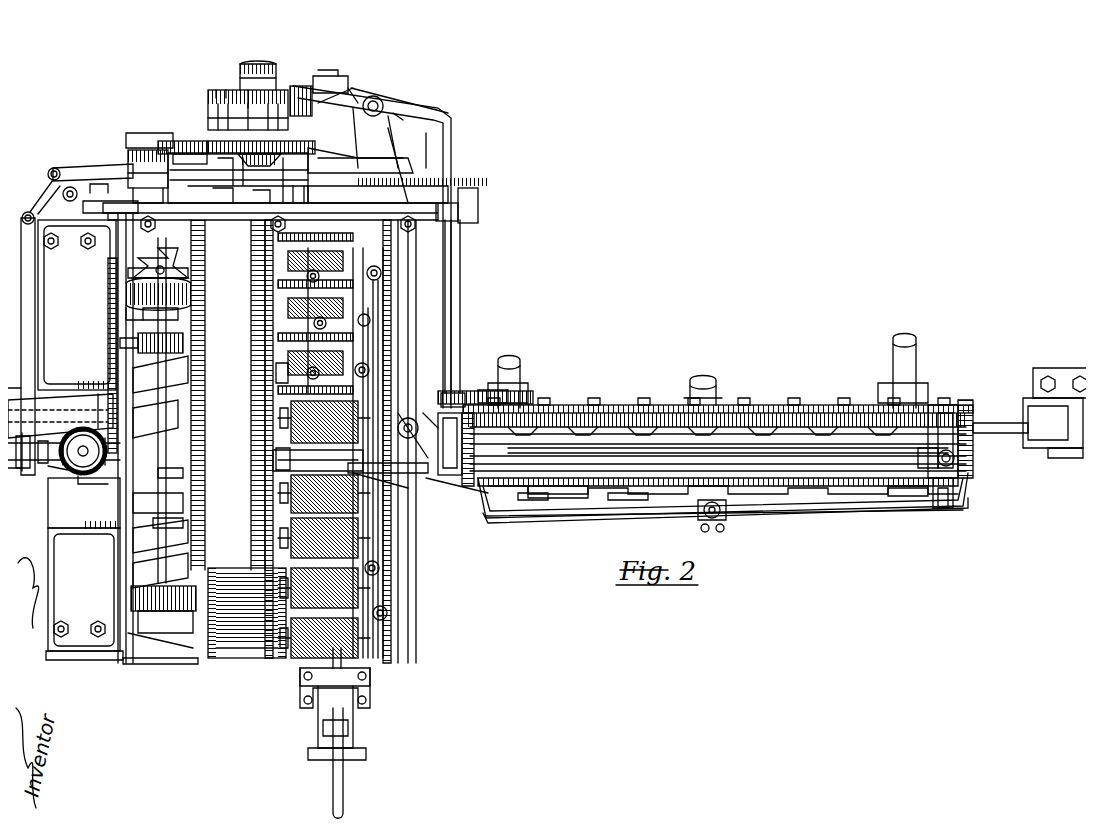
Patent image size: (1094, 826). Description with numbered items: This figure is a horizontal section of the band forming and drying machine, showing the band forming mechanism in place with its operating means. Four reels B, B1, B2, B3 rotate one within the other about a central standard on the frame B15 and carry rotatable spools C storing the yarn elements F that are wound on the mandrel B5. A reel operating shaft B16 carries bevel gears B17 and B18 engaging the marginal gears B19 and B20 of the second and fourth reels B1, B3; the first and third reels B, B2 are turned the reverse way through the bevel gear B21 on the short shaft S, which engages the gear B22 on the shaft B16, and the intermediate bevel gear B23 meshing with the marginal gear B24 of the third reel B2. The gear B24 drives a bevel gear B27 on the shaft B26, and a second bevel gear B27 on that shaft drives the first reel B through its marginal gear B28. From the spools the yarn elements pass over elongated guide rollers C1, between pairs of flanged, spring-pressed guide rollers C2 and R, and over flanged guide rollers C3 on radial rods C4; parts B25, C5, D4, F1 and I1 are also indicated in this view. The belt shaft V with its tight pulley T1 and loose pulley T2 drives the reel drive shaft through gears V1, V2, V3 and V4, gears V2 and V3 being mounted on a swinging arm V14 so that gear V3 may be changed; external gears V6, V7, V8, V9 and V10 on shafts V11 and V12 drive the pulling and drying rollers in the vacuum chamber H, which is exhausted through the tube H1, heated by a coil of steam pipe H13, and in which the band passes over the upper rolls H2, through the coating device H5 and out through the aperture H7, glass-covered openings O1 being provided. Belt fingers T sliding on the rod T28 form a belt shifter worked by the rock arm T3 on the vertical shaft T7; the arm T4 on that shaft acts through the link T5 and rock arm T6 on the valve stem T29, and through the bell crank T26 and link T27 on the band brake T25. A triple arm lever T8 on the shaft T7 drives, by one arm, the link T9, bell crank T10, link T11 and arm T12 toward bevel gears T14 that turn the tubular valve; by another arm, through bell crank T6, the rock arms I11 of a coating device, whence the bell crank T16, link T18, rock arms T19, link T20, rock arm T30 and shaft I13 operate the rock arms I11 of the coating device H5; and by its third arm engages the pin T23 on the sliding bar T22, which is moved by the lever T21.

The first reel B is at (165, 392).
The second reel B1 is at (175, 420).
The third reel B2 is at (180, 330).
The fourth reel B3 is at (188, 505).
The mandrel B5 is at (355, 478).
The frame B15 is at (78, 644).
The reel operating shaft B16 is at (130, 125).
The bevel gear B17 is at (222, 190).
The bevel gear B18 is at (128, 332).
The marginal gear B19 is at (190, 268).
The marginal gear B20 is at (185, 356).
The bevel gear B21 is at (118, 278).
The gear B22 is at (250, 190).
The intermediate bevel gear B23 is at (128, 305).
The marginal gear B24 is at (190, 305).
The gear B25 is at (188, 605).
The shaft B26 is at (130, 580).
The bevel gear B27 is at (145, 490).
The marginal gear B28 is at (145, 466).
The spool C is at (280, 430).
The elongated guide roller C1 is at (330, 320).
The flanged spring pressed guide roller C2 is at (280, 262).
The flanged guide roller C3 is at (362, 357).
The radial rod C4 is at (375, 370).
The bearing C5 is at (372, 278).
The worm gear D4 is at (45, 458).
The yarn element F is at (268, 450).
The feed plate F1 is at (278, 373).
The vacuum chamber H is at (618, 400).
The suction tube H1 is at (698, 378).
The first series of pulling and drying rolls H2 is at (790, 455).
The coating device H5 is at (905, 398).
The aperture H7 is at (990, 440).
The coil of steam pipe H13 is at (610, 480).
The pipe I1 is at (510, 368).
The rock arm I11 is at (485, 485).
The shaft I13 is at (948, 465).
The glass covered opening O1 is at (520, 490).
The flanged spring pressed guide roller R is at (290, 290).
The short shaft S is at (118, 265).
The belt finger T is at (296, 72).
The tight pulley T1 is at (222, 82).
The loose pulley T2 is at (210, 82).
The rock arm T3 is at (368, 92).
The arm T4 is at (445, 100).
The link T5 is at (445, 135).
The rock arm T6 is at (435, 410).
The vertical shaft T7 is at (395, 100).
The triple arm lever T8 is at (345, 82).
The link T9 is at (62, 160).
The bell crank T10 is at (46, 180).
The link T11 is at (22, 250).
The arm T12 is at (50, 465).
The bevel gears T14 is at (75, 472).
The bell crank T16 is at (420, 462).
The link T18 is at (560, 505).
The rock arm T19 is at (690, 510).
The link T20 is at (805, 508).
The lever T21 is at (335, 775).
The sliding bar T22 is at (340, 690).
The pin T23 is at (320, 72).
The band brake T25 is at (262, 68).
The bell crank T26 is at (430, 125).
The link T27 is at (350, 140).
The rod T28 is at (355, 78).
The valve stem T29 is at (415, 415).
The rock arm T30 is at (938, 502).
The belt shaft V is at (245, 50).
The driving gear V1 is at (205, 105).
The driving gear V2 is at (175, 132).
The driving gear V3 is at (210, 130).
The driving gear V4 is at (128, 150).
The external gear V6 is at (292, 190).
The external gear V7 is at (440, 178).
The external gear V8 is at (478, 178).
The external gear V9 is at (478, 382).
The external gear V10 is at (522, 387).
The shaft V11 is at (470, 190).
The shaft V12 is at (448, 240).
The swinging arm V14 is at (128, 172).